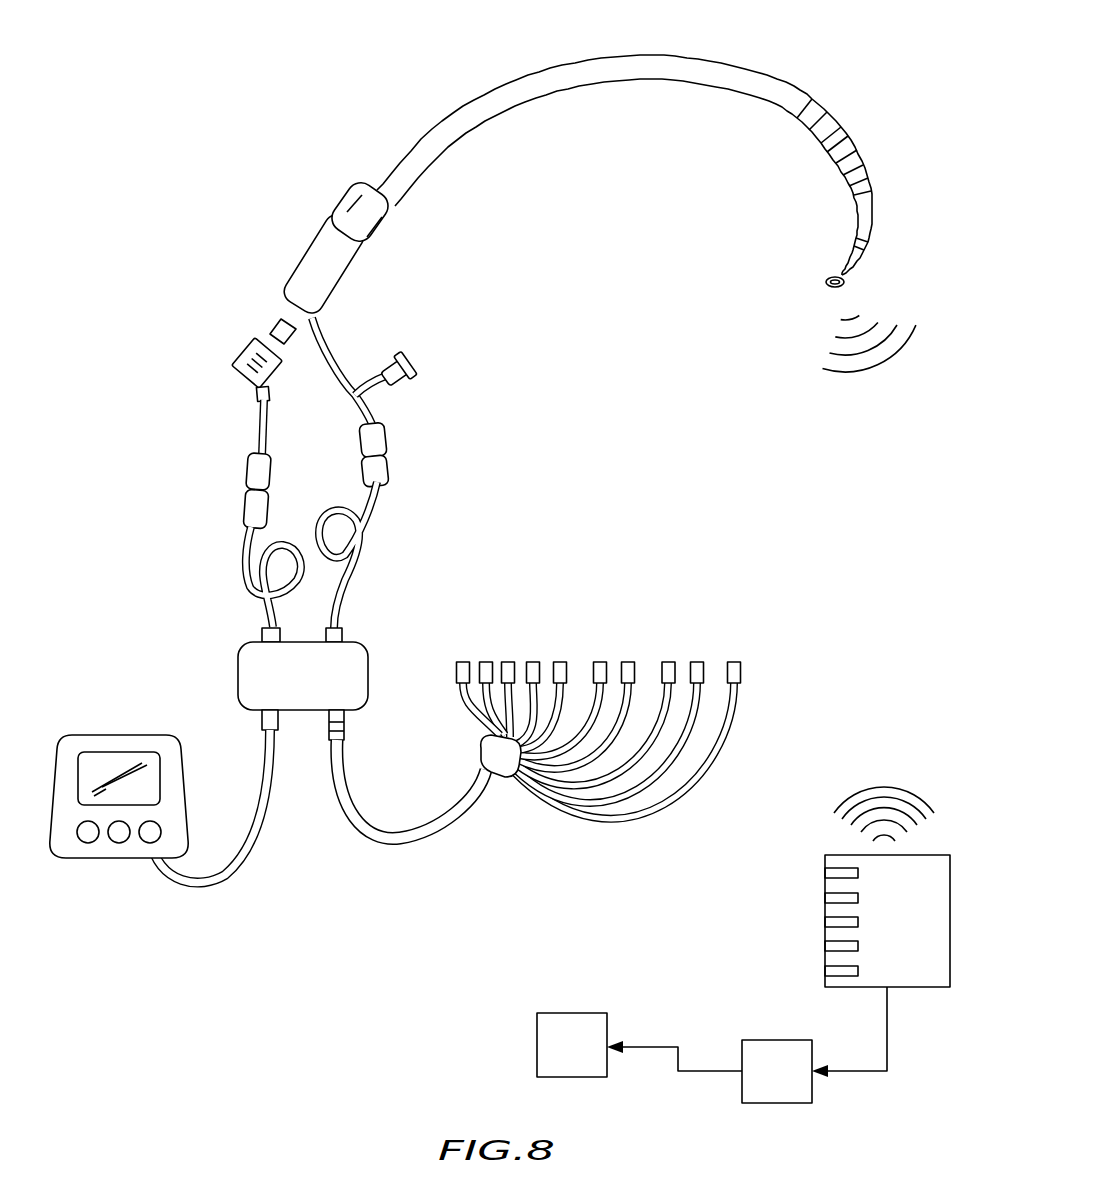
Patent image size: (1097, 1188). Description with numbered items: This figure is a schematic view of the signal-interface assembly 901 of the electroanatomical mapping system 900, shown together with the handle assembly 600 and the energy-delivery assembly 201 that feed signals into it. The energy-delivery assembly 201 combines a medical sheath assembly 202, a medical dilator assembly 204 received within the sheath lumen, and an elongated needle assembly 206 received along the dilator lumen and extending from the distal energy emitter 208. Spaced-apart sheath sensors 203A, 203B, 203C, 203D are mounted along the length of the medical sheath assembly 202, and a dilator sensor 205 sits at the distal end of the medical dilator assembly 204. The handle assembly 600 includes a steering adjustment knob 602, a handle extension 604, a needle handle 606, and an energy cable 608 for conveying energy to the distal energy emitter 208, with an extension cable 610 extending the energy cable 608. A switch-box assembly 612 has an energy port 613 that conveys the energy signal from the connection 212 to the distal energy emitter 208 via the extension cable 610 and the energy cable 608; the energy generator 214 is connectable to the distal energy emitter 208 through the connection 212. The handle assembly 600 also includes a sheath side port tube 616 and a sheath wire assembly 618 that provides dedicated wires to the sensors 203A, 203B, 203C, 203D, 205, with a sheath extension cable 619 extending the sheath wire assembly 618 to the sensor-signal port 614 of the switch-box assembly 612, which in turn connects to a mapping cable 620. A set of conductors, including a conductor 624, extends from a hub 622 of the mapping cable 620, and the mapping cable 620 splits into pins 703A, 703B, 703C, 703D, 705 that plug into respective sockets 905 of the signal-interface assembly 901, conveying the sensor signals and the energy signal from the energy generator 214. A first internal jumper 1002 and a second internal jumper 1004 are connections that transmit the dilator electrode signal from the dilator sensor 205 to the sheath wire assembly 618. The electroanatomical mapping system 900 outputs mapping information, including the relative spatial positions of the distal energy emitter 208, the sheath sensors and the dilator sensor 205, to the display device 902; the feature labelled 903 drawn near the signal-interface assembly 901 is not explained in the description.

The handle assembly 600 is at (313, 88).
The steering adjustment knob 602 is at (338, 188).
The handle extension 604 is at (303, 256).
The needle handle 606 is at (243, 352).
The energy cable 608 is at (263, 430).
The extension cable 610 is at (244, 548).
The switch-box assembly 612 is at (238, 678).
The energy port 613 is at (262, 636).
The sensor-signal port 614 is at (342, 636).
The sheath side port tube 616 is at (402, 355).
The sheath wire assembly 618 is at (351, 410).
The sheath extension cable 619 is at (380, 497).
The mapping cable 620 is at (405, 858).
The hub 622 is at (481, 755).
The conductor 624 is at (654, 820).
The first internal jumper 1002 is at (303, 750).
The second internal jumper 1004 is at (405, 438).
The energy-delivery assembly 201 is at (733, 262).
The medical sheath assembly 202 is at (638, 262).
The medical dilator assembly 204 is at (858, 224).
The elongated needle assembly 206 is at (852, 272).
The sheath sensor 203A is at (865, 174).
The sheath sensor 203B is at (857, 161).
The sheath sensor 203C is at (836, 139).
The sheath sensor 203D is at (808, 116).
The dilator sensor 205 is at (861, 247).
The distal energy emitter 208 is at (827, 283).
The connection 212 is at (208, 887).
The energy generator 214 is at (88, 858).
The pin 703A is at (580, 556).
The pin 703B is at (485, 664).
The pin 703C is at (508, 664).
The pin 703D is at (538, 664).
The pin 705 is at (598, 665).
The electroanatomical mapping system 900 is at (796, 1087).
The signal-interface assembly 901 is at (932, 939).
The display device 902 is at (587, 1059).
The wireless signal 903 is at (885, 786).
The sockets 905 is at (810, 857).